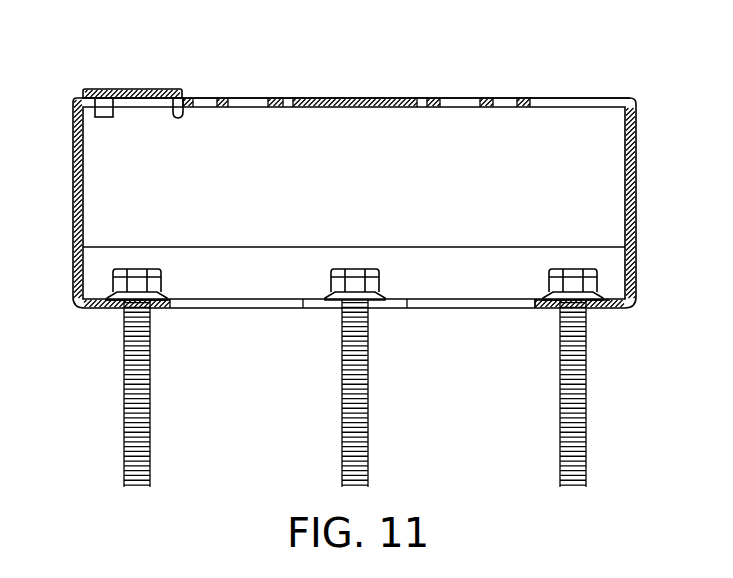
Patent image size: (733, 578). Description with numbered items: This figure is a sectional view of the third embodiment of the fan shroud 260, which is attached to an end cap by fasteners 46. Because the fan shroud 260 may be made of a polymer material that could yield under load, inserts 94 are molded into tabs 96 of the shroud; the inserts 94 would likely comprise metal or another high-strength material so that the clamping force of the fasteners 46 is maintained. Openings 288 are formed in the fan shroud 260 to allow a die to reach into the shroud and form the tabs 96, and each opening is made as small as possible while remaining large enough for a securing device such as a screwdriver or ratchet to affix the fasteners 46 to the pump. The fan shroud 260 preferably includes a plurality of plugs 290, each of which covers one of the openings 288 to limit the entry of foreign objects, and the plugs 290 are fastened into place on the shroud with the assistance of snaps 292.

The fan shroud 260 is at (73, 173).
The openings 288 is at (577, 98).
The plugs 290 is at (130, 89).
The snaps 292 is at (175, 112).
The fasteners 46 is at (150, 390).
The inserts 94 is at (152, 308).
The tabs 96 is at (535, 302).